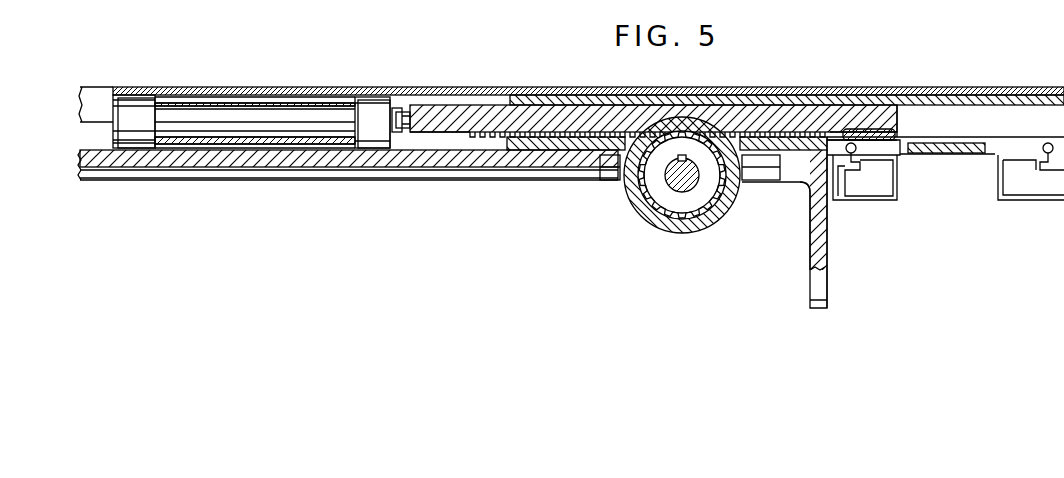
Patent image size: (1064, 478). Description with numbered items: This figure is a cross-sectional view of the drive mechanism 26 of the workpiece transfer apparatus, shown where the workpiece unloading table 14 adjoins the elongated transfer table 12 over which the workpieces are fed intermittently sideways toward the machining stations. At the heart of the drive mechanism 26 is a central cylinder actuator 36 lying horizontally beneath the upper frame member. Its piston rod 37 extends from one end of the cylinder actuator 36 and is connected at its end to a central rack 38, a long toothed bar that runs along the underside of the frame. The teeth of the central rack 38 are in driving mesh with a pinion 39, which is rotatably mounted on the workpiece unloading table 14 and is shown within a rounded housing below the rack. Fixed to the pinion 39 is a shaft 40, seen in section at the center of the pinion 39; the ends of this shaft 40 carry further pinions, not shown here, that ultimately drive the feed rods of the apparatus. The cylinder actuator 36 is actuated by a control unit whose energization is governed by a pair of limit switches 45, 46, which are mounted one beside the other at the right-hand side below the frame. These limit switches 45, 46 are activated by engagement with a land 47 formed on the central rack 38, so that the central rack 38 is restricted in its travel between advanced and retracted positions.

The elongated transfer table 12 is at (95, 180).
The workpiece unloading table 14 is at (955, 88).
The drive mechanism 26 is at (528, 227).
The central cylinder actuator 36 is at (241, 110).
The piston rod 37 is at (404, 100).
The central rack 38 is at (564, 105).
The pinion 39 is at (654, 198).
The shaft 40 is at (692, 186).
The limit switch 45 is at (868, 196).
The limit switch 46 is at (1036, 194).
The land 47 is at (858, 128).